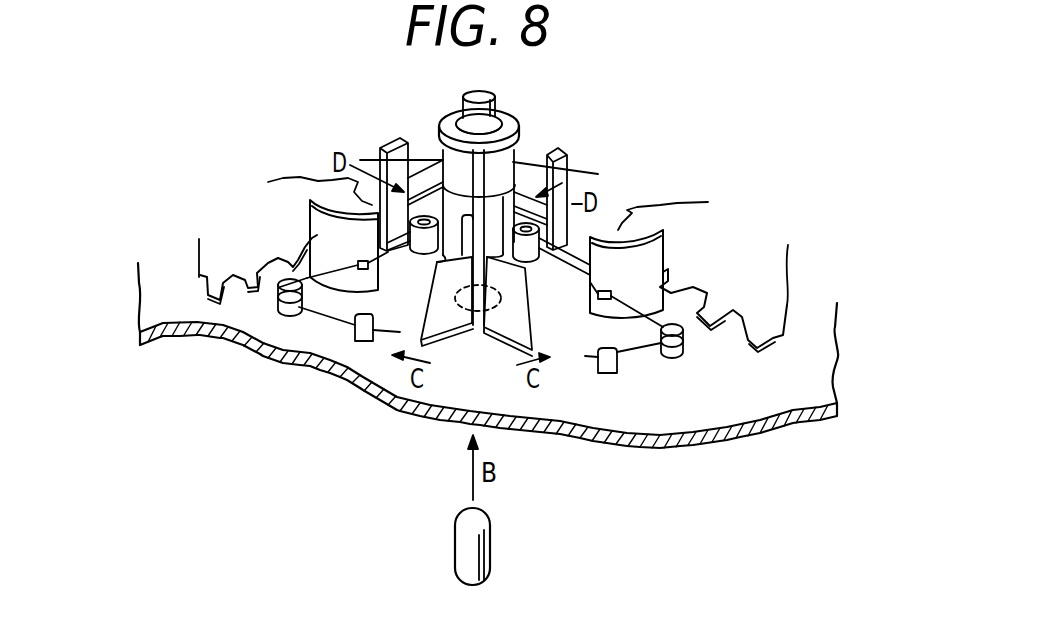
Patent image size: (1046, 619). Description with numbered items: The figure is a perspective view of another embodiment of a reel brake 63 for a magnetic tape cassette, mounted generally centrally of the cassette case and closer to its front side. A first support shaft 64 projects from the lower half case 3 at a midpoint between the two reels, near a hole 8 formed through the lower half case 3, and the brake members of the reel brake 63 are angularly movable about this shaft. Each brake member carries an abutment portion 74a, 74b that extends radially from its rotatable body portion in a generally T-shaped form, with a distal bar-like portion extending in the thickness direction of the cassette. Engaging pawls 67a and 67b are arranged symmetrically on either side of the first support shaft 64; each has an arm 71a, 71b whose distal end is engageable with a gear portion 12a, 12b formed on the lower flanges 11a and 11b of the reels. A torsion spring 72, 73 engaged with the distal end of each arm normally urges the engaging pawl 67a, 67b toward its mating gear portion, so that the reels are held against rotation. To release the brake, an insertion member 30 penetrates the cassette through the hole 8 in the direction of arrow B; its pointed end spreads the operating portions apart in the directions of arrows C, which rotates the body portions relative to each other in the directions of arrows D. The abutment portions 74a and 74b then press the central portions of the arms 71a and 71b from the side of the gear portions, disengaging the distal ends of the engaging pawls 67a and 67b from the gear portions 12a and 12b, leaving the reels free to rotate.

The lower half case 3 is at (787, 393).
The hole 8 is at (460, 314).
The lower flange 11a is at (210, 253).
The lower flange 11b is at (710, 226).
The gear portion 12a is at (201, 276).
The gear portion 12b is at (720, 306).
The insertion member 30 is at (478, 542).
The reel brake 63 is at (442, 110).
The first support shaft 64 is at (485, 100).
The engaging pawl 67a is at (320, 233).
The engaging pawl 67b is at (649, 246).
The arm 71a is at (383, 257).
The arm 71b is at (547, 271).
The torsion spring 72 is at (318, 316).
The torsion spring 73 is at (641, 353).
The abutment portion 74a is at (553, 155).
The abutment portion 74b is at (383, 142).